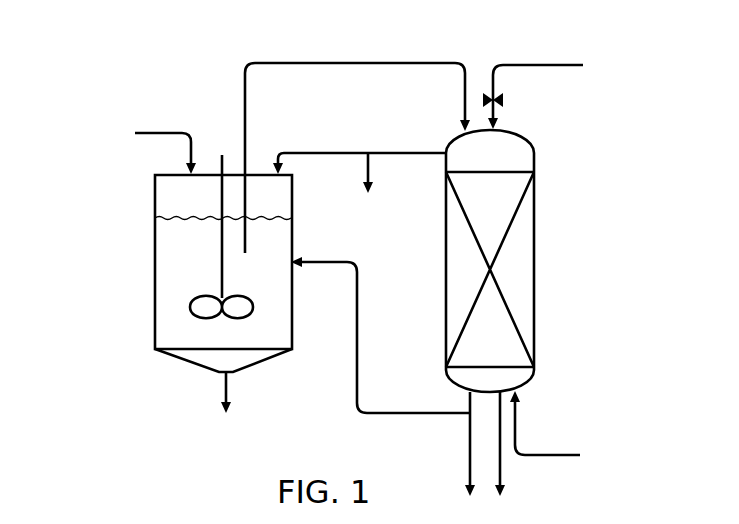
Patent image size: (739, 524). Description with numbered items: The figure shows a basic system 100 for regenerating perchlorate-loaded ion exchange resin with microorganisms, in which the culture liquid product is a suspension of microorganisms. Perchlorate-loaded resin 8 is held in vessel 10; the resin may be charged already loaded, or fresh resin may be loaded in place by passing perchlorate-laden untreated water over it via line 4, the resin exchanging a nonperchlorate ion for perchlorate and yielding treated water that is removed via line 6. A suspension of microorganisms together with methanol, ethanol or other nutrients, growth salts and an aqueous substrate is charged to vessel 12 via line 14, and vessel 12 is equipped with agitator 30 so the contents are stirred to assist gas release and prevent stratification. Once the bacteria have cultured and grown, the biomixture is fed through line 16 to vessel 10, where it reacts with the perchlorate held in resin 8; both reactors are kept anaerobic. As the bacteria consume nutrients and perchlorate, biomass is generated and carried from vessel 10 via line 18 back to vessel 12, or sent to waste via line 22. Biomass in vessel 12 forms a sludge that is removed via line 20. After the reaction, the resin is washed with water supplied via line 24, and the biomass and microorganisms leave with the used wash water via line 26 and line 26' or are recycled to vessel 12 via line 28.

The untreated water line 4 is at (575, 64).
The treated water line 6 is at (502, 468).
The perchlorate-loaded resin 8 is at (527, 247).
The vessel 10 is at (527, 155).
The vessel 12 is at (160, 202).
The line 14 is at (143, 134).
The line 16 is at (340, 63).
The line 18 is at (358, 326).
The line 20 is at (229, 391).
The line 22 is at (468, 448).
The line 24 is at (520, 448).
The line 26 is at (407, 136).
The line 26' is at (379, 185).
The line 28 is at (300, 153).
The agitator 30 is at (220, 268).
The system 100 is at (117, 438).